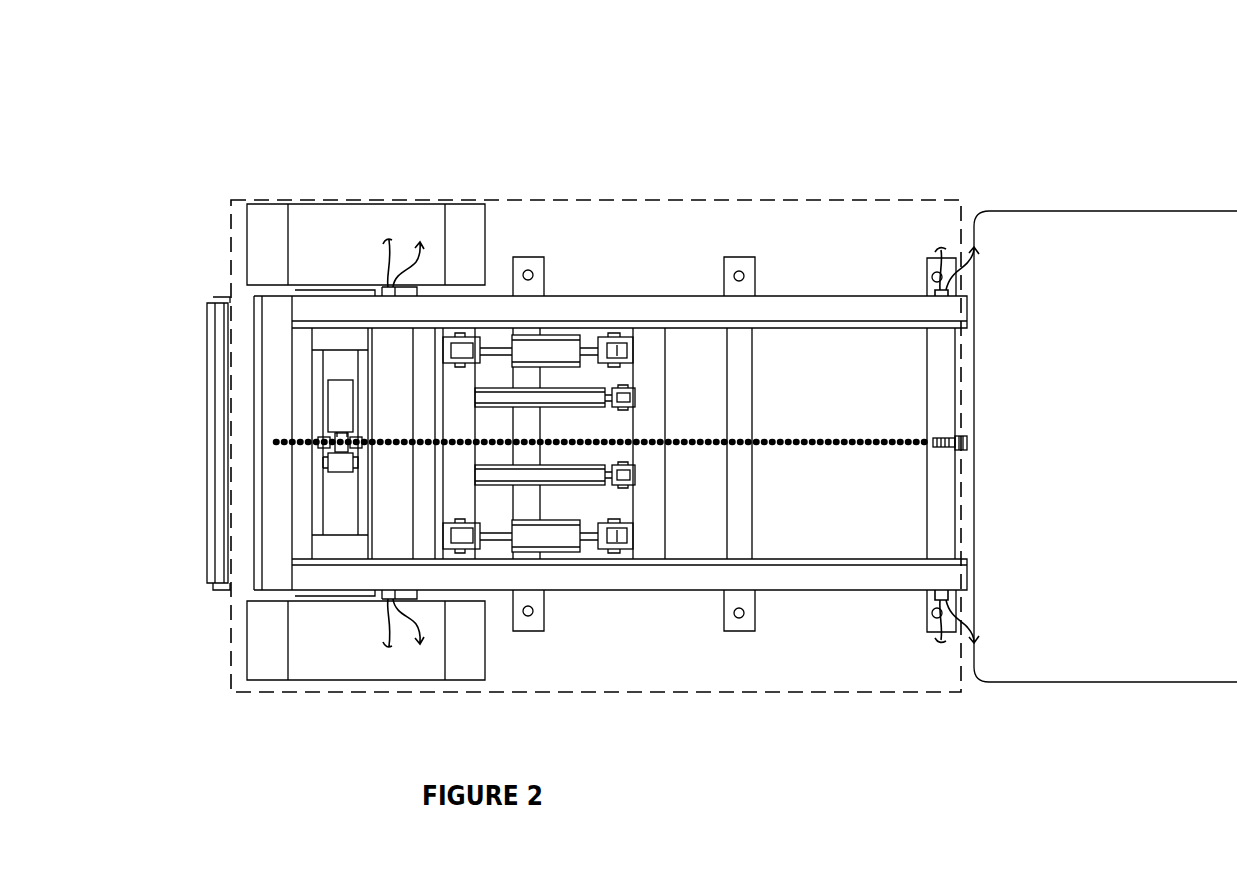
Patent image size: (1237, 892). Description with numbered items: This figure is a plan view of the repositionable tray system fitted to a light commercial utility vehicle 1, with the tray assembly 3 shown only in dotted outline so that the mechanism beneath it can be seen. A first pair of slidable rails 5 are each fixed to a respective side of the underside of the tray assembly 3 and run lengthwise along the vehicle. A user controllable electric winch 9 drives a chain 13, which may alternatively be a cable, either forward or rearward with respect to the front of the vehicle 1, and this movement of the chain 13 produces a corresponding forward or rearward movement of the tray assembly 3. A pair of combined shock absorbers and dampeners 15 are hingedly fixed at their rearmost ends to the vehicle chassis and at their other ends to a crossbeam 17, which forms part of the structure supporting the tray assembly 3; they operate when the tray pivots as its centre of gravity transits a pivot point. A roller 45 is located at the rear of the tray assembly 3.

The vehicle 1 is at (1098, 274).
The tray assembly 3 is at (839, 237).
The first pair of slidable rails 5 is at (665, 308).
The user controllable electric winch 9 is at (347, 403).
The chain 13 is at (815, 450).
The combined shock absorbers and dampeners 15 is at (575, 345).
The crossbeam 17 is at (648, 480).
The roller 45 is at (213, 517).